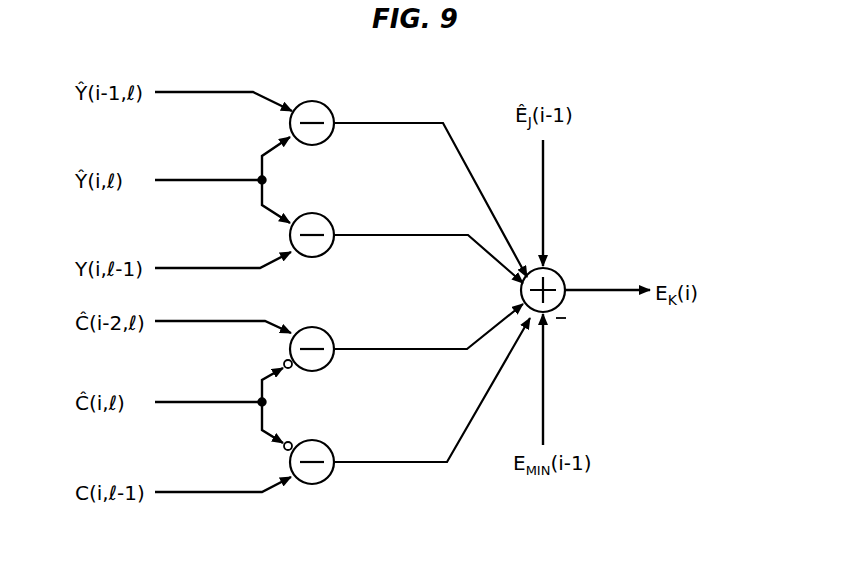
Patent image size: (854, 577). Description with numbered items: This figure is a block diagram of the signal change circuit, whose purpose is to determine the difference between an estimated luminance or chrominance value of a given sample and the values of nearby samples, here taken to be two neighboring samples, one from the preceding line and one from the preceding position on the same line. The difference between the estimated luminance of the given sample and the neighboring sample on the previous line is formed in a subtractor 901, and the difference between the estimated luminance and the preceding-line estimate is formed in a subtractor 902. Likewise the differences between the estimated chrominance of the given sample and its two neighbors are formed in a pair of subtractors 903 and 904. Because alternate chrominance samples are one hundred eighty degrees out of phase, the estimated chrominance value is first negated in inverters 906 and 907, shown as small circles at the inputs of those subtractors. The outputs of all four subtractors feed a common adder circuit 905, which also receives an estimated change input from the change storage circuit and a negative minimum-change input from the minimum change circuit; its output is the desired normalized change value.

The subtractor 901 is at (325, 217).
The subtractor 902 is at (325, 105).
The subtractor 903 is at (325, 331).
The subtractor 904 is at (325, 444).
The adder circuit 905 is at (560, 274).
The inverter 906 is at (291, 369).
The inverter 907 is at (290, 441).